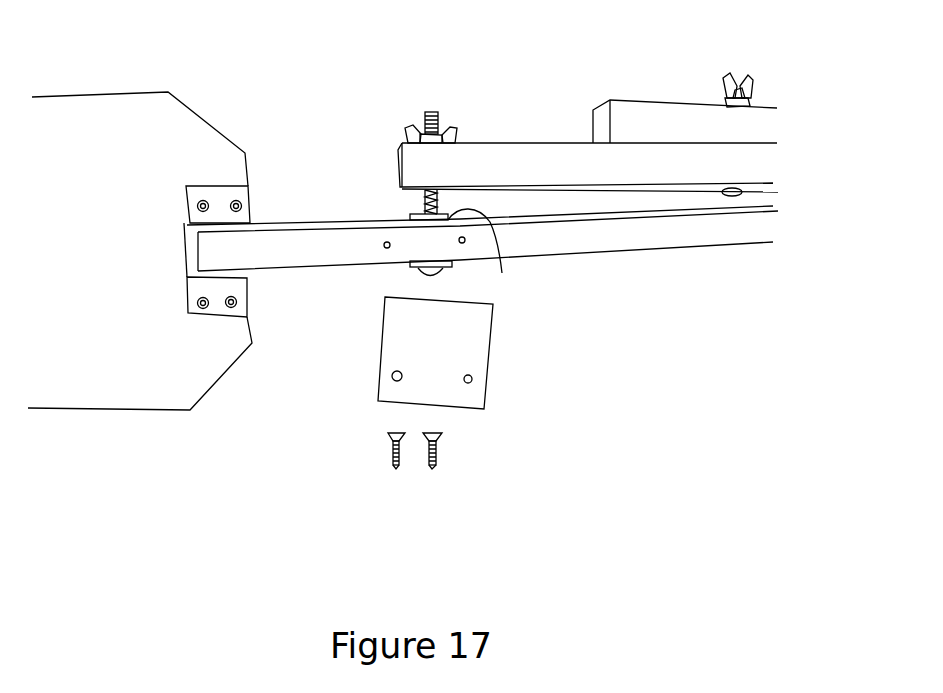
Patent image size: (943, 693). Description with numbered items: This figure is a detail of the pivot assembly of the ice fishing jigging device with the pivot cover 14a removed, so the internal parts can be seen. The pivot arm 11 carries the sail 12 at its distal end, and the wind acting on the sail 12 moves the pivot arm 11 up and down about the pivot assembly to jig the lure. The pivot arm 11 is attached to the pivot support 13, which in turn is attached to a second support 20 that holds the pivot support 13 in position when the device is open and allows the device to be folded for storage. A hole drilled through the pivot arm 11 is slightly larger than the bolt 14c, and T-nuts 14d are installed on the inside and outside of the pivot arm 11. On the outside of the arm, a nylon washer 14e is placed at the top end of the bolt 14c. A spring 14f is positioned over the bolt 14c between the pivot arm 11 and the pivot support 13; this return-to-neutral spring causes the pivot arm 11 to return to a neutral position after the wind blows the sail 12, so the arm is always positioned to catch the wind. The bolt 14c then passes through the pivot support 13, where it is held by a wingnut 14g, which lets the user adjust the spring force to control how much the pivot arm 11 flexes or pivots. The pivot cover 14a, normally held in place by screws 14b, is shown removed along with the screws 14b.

The pivot arm 11 is at (632, 238).
The sail 12 is at (157, 123).
The pivot support 13 is at (562, 158).
The second support 20 is at (640, 110).
The pivot cover 14a is at (484, 337).
The screws 14b is at (388, 455).
The bolt 14c is at (438, 108).
The T-nuts 14d is at (450, 262).
The nylon washer 14e is at (450, 263).
The spring 14f is at (420, 202).
The wingnut 14g is at (415, 123).